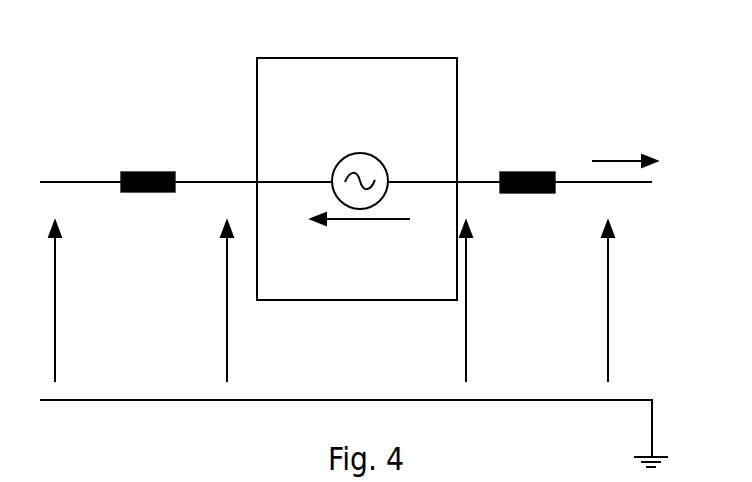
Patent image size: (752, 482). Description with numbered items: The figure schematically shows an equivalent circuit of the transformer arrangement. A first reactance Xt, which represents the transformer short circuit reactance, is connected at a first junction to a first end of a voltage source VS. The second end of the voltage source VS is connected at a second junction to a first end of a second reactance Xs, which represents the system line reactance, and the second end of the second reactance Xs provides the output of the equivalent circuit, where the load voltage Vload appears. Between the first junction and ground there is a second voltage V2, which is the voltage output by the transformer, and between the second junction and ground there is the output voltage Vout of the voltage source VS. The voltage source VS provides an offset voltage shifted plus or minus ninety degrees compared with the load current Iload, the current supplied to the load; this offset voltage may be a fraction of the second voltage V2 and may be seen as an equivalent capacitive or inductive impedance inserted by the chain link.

The voltage source VS is at (257, 69).
The first reactance Xt is at (148, 197).
The second reactance Xs is at (527, 198).
The second voltage V2 is at (211, 301).
The output voltage Vout is at (436, 301).
The load voltage Vload is at (582, 301).
The load current Iload is at (624, 141).